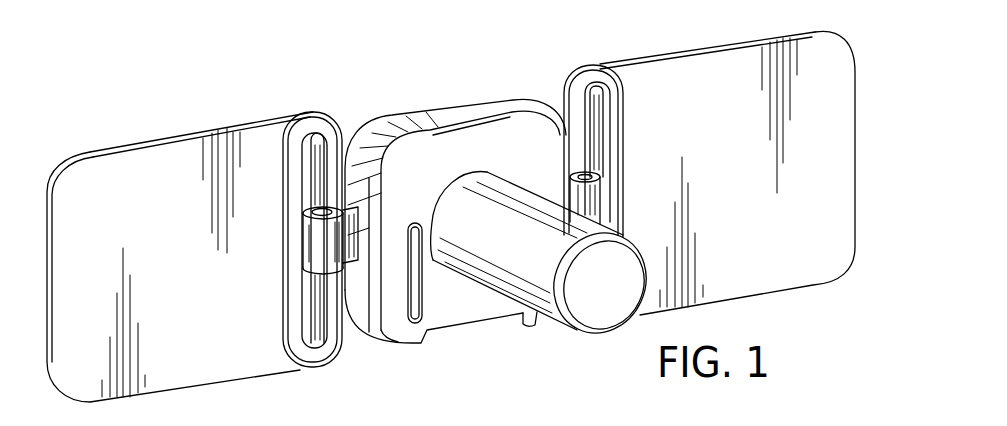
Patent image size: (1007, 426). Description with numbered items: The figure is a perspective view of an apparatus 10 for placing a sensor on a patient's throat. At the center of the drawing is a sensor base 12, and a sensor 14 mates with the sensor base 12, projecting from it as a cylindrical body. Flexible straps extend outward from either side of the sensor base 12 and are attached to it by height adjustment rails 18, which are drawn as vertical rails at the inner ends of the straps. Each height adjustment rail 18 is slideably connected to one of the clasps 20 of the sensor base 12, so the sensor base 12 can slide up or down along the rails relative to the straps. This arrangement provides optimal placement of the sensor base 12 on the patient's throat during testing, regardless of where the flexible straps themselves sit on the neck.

The apparatus 10 is at (592, 43).
The sensor base 12 is at (480, 113).
The sensor 14 is at (513, 280).
The height adjustment rails 18 is at (328, 330).
The clasps 20 is at (337, 260).